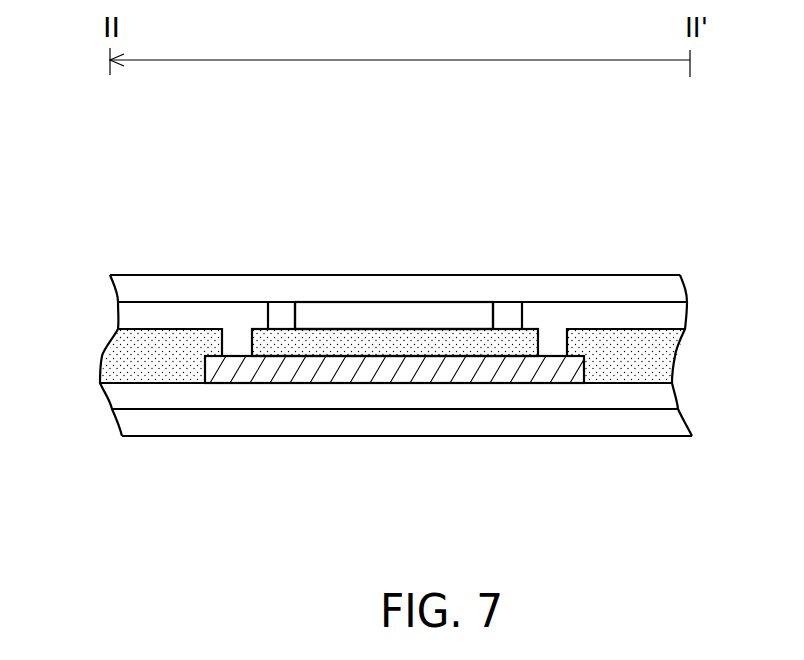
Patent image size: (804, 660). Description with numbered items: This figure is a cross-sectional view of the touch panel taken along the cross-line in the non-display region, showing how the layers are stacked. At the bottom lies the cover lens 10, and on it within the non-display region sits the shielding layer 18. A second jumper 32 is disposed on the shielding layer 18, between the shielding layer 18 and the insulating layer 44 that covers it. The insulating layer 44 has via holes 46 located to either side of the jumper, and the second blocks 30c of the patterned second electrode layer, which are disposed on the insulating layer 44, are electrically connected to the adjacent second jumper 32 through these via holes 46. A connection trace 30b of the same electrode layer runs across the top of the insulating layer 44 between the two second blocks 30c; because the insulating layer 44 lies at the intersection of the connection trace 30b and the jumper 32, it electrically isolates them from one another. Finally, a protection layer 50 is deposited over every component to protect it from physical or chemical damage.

The cover lens 10 is at (680, 426).
The shielding layer 18 is at (663, 393).
The connection traces 30b is at (372, 310).
The second blocks 30c is at (180, 310).
The second jumpers 32 is at (420, 373).
The insulating layer 44 is at (167, 368).
The via holes 46 is at (220, 345).
The protection layer 50 is at (675, 286).